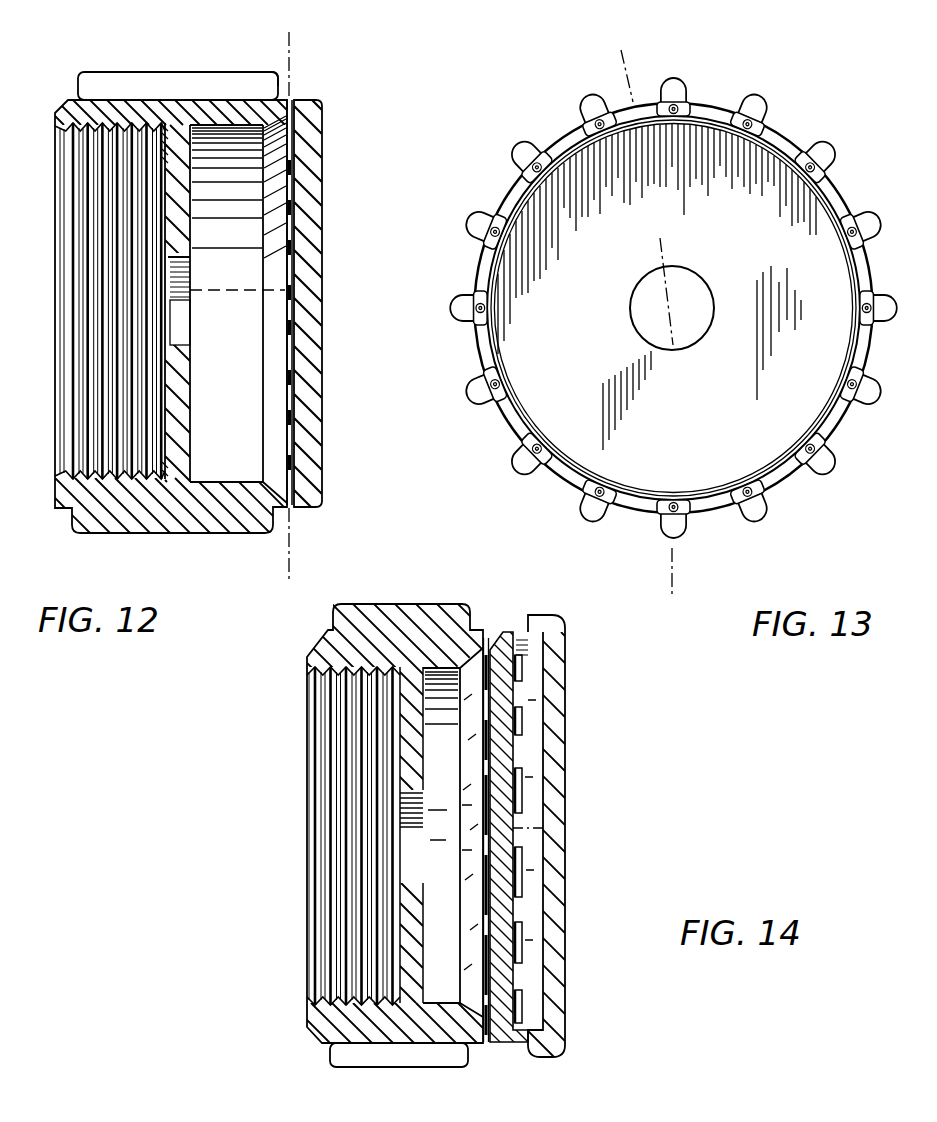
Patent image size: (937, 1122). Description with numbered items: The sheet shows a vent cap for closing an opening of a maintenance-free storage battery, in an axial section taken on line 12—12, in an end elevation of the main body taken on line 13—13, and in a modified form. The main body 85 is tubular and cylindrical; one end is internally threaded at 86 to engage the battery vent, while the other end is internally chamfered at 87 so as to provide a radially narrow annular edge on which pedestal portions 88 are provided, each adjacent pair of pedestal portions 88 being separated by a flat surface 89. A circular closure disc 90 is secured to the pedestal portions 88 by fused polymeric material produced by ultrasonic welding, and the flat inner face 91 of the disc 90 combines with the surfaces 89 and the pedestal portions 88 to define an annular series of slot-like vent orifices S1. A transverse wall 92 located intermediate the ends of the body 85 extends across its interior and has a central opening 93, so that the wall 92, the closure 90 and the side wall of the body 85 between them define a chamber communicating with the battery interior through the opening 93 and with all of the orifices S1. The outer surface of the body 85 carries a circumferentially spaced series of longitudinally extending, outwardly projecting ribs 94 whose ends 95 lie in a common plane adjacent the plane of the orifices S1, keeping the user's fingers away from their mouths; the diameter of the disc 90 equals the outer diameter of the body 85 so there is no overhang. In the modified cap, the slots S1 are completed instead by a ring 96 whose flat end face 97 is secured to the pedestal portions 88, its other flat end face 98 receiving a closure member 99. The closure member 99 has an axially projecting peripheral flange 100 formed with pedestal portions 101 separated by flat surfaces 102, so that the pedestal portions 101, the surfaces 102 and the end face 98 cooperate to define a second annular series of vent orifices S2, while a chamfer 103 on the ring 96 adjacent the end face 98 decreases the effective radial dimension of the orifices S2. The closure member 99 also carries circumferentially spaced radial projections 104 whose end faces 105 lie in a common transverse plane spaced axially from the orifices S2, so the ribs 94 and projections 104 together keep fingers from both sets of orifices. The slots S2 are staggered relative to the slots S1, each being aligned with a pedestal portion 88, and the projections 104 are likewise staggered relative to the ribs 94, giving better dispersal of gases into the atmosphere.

In FIG. 12, the main body 85 is at (72, 507).
In FIG. 13, the main body 85 is at (800, 146).
In FIG. 14, the main body 85 is at (316, 1040).
In FIG. 12, the internal threads 86 is at (76, 254).
In FIG. 12, the internal chamfer 87 is at (272, 435).
In FIG. 13, the internal chamfer 87 is at (522, 412).
In FIG. 12, the pedestal portions 88 is at (285, 378).
In FIG. 13, the pedestal portions 88 is at (842, 208).
In FIG. 14, the pedestal portions 88 is at (484, 790).
In FIG. 12, the flat surface 89 is at (298, 183).
In FIG. 13, the flat surface 89 is at (864, 280).
In FIG. 12, the circular closure disc 90 is at (315, 345).
In FIG. 12, the flat inner face 91 is at (285, 263).
In FIG. 12, the transverse wall 92 is at (192, 453).
In FIG. 13, the transverse wall 92 is at (716, 411).
In FIG. 12, the central opening 93 is at (182, 343).
In FIG. 13, the central opening 93 is at (695, 285).
In FIG. 12, the ribs 94 is at (163, 84).
In FIG. 13, the ribs 94 is at (512, 167).
In FIG. 14, the ribs 94 is at (400, 1057).
In FIG. 12, the rib ends 95 is at (274, 78).
In FIG. 14, the ring 96 is at (503, 1043).
In FIG. 14, the flat end face 97 is at (480, 1030).
In FIG. 14, the end face 98 is at (523, 718).
In FIG. 14, the closure member 99 is at (567, 788).
In FIG. 14, the peripheral flange 100 is at (523, 668).
In FIG. 14, the pedestal portions 101 is at (520, 828).
In FIG. 14, the flat surfaces 102 is at (518, 933).
In FIG. 14, the chamfer 103 is at (490, 1020).
In FIG. 14, the radial projections 104 is at (545, 622).
In FIG. 14, the end faces 105 is at (521, 630).
In FIG. 12, the vent orifices S1 is at (290, 97).
In FIG. 14, the vent orifices S1 is at (487, 1043).
In FIG. 14, the vent orifices S2 is at (509, 633).
In FIG. 13, the section line 12— 12 is at (615, 52).
In FIG. 12, the section line 13— 13 is at (289, 45).